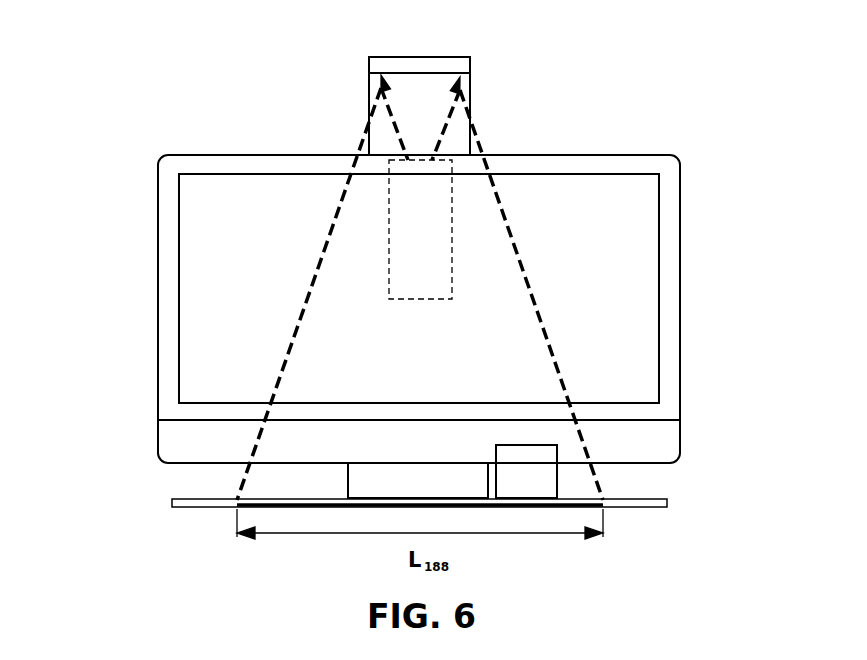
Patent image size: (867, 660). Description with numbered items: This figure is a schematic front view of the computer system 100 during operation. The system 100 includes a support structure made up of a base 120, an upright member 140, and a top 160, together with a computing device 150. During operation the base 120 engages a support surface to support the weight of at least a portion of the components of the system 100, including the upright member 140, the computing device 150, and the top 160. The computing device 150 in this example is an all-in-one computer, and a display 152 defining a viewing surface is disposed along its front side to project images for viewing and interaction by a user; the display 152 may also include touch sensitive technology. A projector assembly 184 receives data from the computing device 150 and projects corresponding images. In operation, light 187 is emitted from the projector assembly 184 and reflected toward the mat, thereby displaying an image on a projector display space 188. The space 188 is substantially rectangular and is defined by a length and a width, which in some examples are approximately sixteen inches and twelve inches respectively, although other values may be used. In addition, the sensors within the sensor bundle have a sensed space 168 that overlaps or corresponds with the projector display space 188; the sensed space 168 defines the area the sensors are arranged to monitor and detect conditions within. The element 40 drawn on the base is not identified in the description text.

The computer system 100 is at (612, 95).
The base 120 is at (160, 494).
The upright member 140 is at (484, 107).
The computing device 150 is at (690, 209).
The display 152 is at (419, 288).
The top 160 is at (480, 48).
The sensed space 168 is at (330, 403).
The projector assembly 184 is at (380, 243).
The light 187 is at (362, 130).
The projector display space 188 is at (276, 486).
The object 40 is at (545, 440).